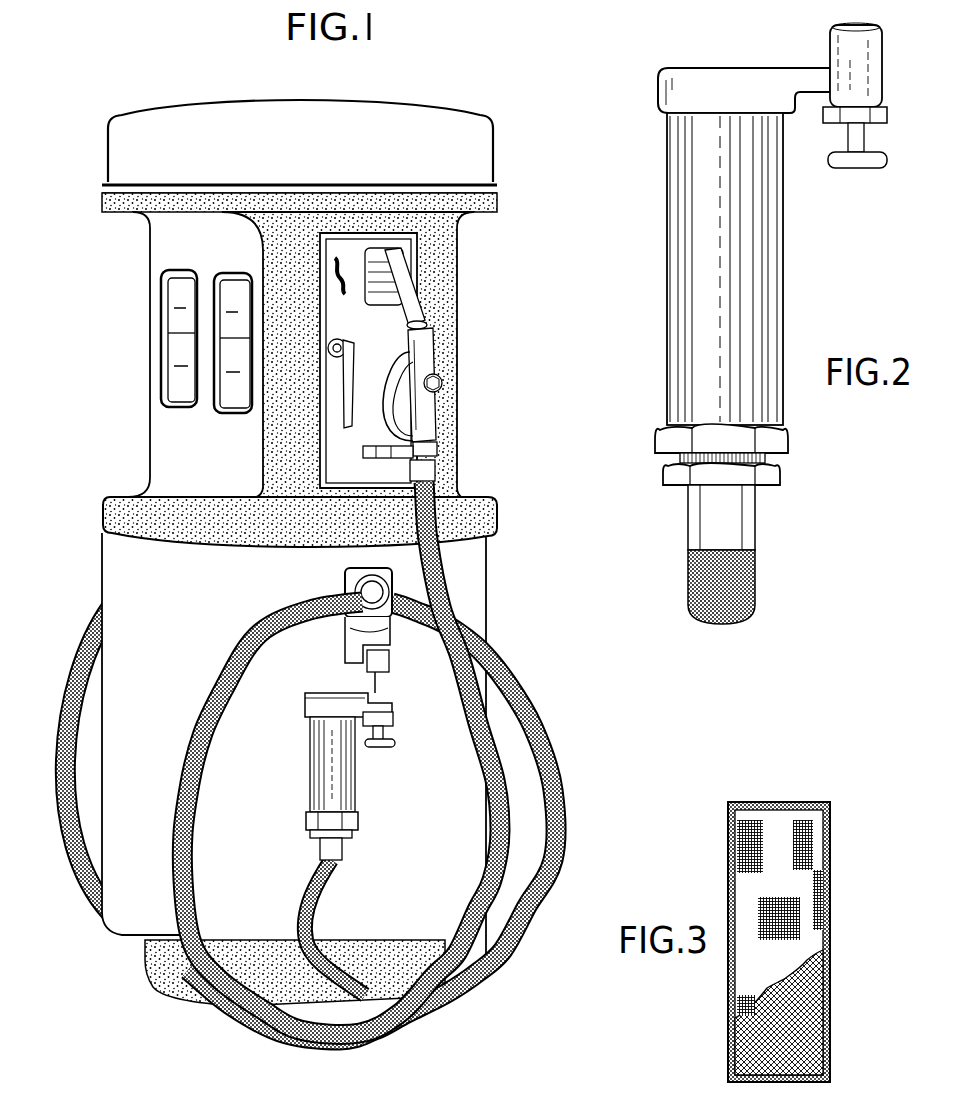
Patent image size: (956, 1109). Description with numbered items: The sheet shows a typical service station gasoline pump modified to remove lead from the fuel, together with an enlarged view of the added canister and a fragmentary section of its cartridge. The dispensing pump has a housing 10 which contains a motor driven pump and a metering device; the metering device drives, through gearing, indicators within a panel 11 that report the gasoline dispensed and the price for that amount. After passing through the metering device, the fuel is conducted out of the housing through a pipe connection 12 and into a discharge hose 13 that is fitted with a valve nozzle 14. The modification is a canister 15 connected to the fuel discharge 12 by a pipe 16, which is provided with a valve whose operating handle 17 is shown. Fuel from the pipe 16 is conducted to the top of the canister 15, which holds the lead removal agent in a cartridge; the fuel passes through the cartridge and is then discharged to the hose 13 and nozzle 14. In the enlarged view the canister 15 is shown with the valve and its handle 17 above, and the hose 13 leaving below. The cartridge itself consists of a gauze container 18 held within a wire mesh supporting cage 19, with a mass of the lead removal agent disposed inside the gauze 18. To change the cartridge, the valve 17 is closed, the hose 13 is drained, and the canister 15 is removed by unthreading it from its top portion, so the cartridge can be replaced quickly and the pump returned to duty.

In FIG. 1, the housing 10 is at (488, 588).
In FIG. 1, the panel 11 is at (177, 322).
In FIG. 1, the pipe connection 12 is at (390, 631).
In FIG. 1, the discharge hose 13 is at (543, 723).
In FIG. 2, the discharge hose 13 is at (757, 582).
In FIG. 1, the valve nozzle 14 is at (427, 413).
In FIG. 1, the canister 15 is at (320, 795).
In FIG. 2, the canister 15 is at (765, 293).
In FIG. 1, the pipe 16 is at (377, 693).
In FIG. 2, the pipe 16 is at (878, 73).
In FIG. 1, the operating handle 17 is at (393, 742).
In FIG. 2, the operating handle 17 is at (888, 166).
In FIG. 3, the gauze container 18 is at (812, 843).
In FIG. 3, the wire mesh supporting cage 19 is at (830, 925).